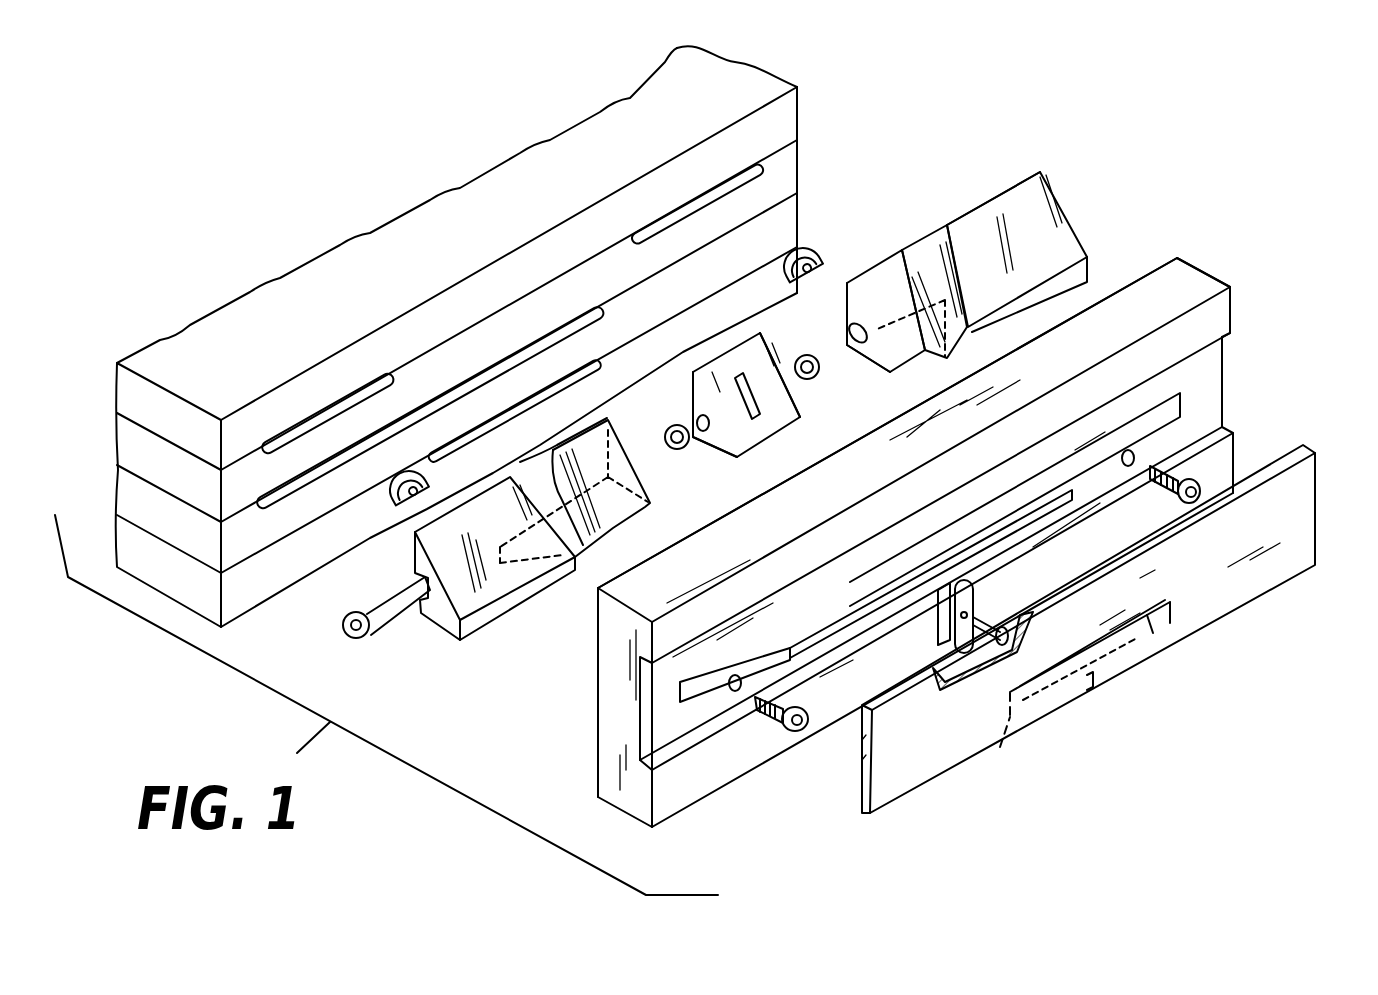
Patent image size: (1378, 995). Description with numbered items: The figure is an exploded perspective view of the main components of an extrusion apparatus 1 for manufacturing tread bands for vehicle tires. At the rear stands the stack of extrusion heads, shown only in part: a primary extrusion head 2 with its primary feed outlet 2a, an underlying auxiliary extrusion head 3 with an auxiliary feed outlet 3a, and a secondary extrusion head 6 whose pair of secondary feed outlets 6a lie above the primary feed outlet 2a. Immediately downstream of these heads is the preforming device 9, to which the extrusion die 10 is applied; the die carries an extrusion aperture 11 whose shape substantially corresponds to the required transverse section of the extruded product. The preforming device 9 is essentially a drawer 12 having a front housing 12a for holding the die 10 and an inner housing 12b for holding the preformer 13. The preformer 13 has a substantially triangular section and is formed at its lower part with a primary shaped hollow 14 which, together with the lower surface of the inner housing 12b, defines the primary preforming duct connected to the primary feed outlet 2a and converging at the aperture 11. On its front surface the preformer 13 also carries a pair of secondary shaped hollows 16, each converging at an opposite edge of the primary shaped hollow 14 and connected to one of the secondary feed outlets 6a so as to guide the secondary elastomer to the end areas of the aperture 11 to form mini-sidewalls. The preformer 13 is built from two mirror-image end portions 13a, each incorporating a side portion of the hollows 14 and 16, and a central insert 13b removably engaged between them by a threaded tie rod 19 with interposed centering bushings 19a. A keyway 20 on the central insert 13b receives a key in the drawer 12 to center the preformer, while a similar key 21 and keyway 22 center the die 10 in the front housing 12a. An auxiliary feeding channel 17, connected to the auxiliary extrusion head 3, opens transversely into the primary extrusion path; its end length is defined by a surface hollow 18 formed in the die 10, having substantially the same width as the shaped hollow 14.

The extrusion apparatus 1 is at (1160, 155).
The primary extrusion head 2 is at (785, 222).
The primary feed outlet 2a is at (480, 387).
The auxiliary extrusion head 3 is at (760, 285).
The auxiliary feed outlet 3a is at (542, 397).
The secondary extrusion head 6 is at (790, 167).
The secondary feed outlets 6a is at (318, 425).
The preforming device 9 is at (1090, 263).
The extrusion die 10 is at (1245, 605).
The extrusion aperture 11 is at (1133, 660).
The drawer 12 is at (1207, 273).
The front housing 12a is at (1213, 355).
The inner housing 12b is at (597, 722).
The preformer 13 is at (1058, 198).
The end portions 13a is at (480, 620).
The central insert 13b is at (728, 360).
The primary shaped hollow 14 is at (640, 553).
The secondary shaped hollows 16 is at (578, 560).
The auxiliary feeding channel 17 is at (857, 617).
The surface hollow 18 is at (1047, 713).
The threaded tie rod 19 is at (370, 620).
The centering bushing 19a is at (820, 373).
The keyway 20 is at (757, 393).
The key 21 is at (983, 629).
The keyway 22 is at (1090, 685).